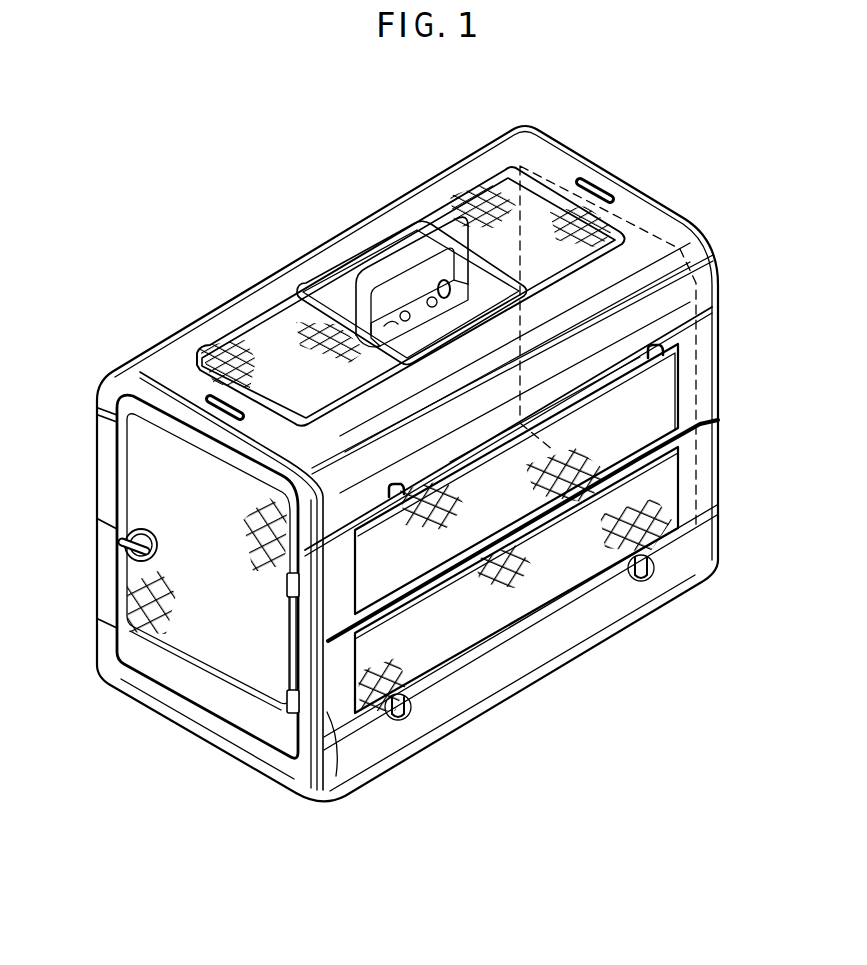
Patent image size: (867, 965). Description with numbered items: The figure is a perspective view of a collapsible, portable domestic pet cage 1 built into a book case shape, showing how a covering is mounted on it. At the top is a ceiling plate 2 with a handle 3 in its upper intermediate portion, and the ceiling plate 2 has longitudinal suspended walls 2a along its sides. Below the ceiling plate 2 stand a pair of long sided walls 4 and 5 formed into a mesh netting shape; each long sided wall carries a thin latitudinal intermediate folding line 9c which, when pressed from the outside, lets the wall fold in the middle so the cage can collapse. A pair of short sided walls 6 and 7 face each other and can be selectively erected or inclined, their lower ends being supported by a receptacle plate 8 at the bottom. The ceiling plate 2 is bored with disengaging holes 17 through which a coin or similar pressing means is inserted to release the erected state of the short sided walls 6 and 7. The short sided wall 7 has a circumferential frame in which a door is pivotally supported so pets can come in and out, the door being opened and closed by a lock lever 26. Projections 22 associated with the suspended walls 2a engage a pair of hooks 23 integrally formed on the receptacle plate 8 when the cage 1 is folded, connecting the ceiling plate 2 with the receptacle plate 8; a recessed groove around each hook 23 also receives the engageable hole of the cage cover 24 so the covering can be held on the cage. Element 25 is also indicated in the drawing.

The collapsible, portable domestic pet cage 1 is at (240, 213).
The ceiling plate 2 is at (719, 250).
The longitudinal suspended wall 2a is at (688, 309).
The handle 3 is at (405, 262).
The long sided wall 4 is at (718, 362).
The long sided wall 5 is at (103, 450).
The short sided wall 6 is at (640, 196).
The short sided wall 7 is at (207, 693).
The receptacle plate 8 is at (546, 669).
The intermediate folding line 9c is at (718, 428).
The disengaging hole 17 is at (588, 182).
The projection 22 is at (399, 497).
The hook 23 is at (648, 578).
The cage cover 24 is at (334, 735).
The door panel 25 is at (142, 502).
The lock lever 26 is at (123, 549).